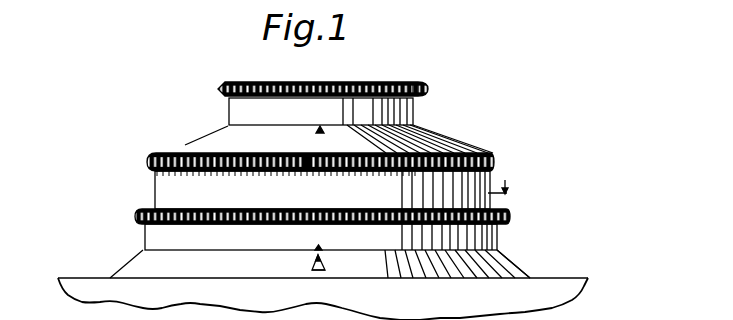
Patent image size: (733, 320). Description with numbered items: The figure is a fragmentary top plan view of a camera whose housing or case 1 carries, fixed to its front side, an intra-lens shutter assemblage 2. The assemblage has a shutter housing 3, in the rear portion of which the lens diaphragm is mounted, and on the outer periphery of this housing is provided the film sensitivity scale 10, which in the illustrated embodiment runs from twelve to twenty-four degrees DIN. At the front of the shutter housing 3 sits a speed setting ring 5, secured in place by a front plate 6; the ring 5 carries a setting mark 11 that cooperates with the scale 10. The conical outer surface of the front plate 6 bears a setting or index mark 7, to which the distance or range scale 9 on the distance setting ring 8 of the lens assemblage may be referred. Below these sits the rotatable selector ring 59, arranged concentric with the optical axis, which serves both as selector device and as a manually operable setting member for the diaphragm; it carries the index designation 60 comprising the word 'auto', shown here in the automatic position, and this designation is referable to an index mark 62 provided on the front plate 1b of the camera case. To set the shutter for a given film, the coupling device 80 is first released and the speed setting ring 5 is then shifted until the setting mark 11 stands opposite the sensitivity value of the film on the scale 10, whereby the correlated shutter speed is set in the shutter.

The camera case 1 is at (88, 290).
The front plate of the camera case 1b is at (143, 250).
The intra-lens shutter assemblage 2 is at (148, 190).
The shutter housing 3 is at (168, 180).
The speed setting ring 5 is at (148, 161).
The front plate 6 is at (228, 137).
The index mark 7 is at (315, 131).
The distance setting ring 8 is at (220, 87).
The distance scale 9 is at (229, 105).
The film sensitivity scale 10 is at (322, 193).
The setting mark 11 is at (312, 160).
The rotatable selector ring 59 is at (137, 216).
The index mark 'auto' 60 is at (312, 254).
The index mark 62 is at (326, 262).
The coupling device 80 is at (494, 188).